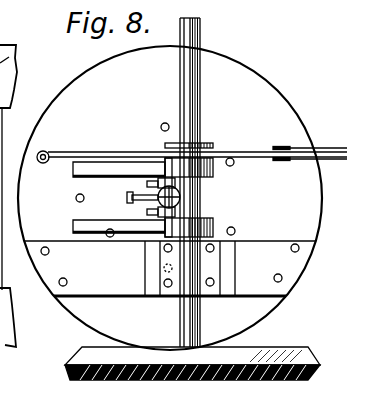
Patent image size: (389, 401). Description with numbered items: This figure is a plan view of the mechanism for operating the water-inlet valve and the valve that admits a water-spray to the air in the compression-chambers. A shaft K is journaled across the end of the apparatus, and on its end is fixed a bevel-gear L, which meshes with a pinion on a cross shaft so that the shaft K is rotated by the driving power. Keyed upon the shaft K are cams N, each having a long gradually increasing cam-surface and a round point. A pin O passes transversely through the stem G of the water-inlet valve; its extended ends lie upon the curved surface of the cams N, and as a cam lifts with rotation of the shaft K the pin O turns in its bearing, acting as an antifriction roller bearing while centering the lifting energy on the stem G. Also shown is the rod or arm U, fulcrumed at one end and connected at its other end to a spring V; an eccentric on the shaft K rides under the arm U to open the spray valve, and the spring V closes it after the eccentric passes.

The shaft K is at (188, 86).
The rod or arm U is at (93, 152).
The spring V is at (38, 152).
The pin O is at (168, 162).
The cams N is at (78, 225).
The stem of the water-inlet valve G is at (181, 199).
The bevel-gear L is at (280, 350).